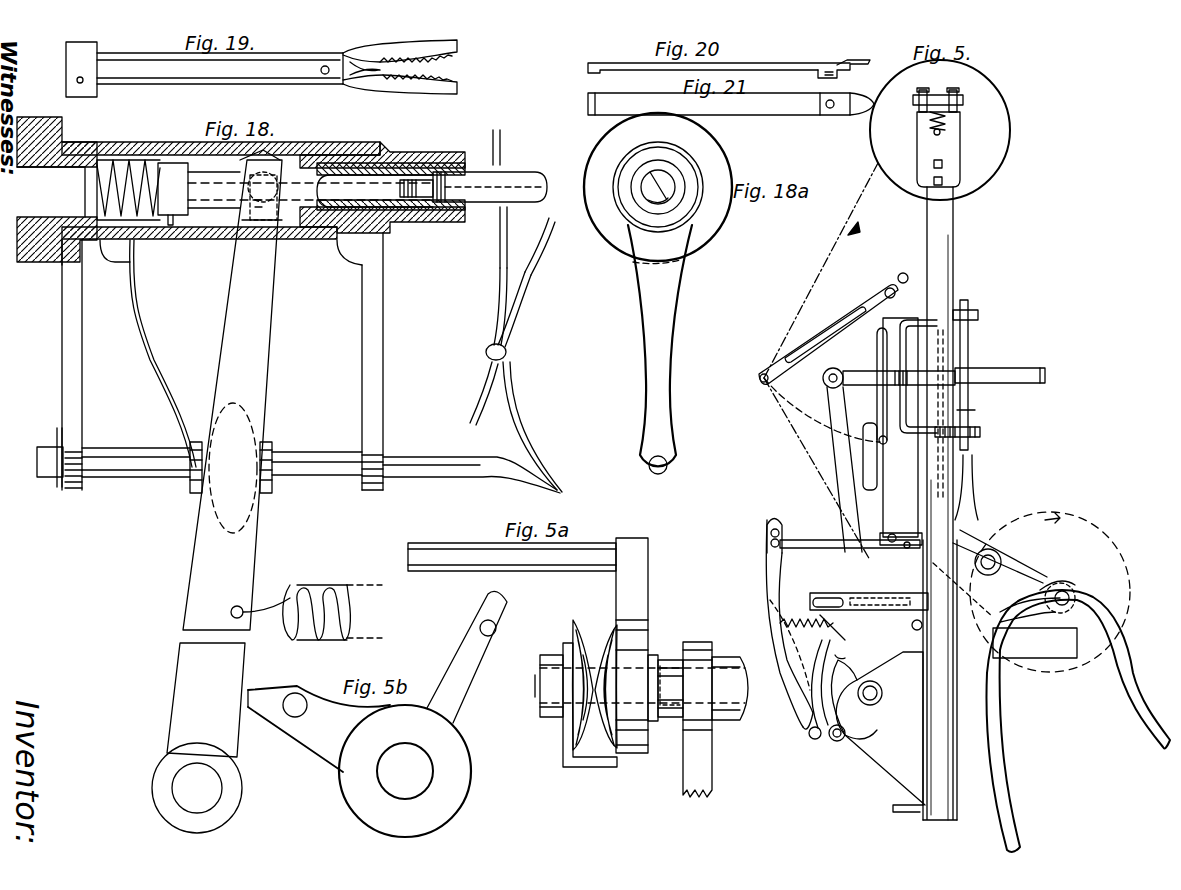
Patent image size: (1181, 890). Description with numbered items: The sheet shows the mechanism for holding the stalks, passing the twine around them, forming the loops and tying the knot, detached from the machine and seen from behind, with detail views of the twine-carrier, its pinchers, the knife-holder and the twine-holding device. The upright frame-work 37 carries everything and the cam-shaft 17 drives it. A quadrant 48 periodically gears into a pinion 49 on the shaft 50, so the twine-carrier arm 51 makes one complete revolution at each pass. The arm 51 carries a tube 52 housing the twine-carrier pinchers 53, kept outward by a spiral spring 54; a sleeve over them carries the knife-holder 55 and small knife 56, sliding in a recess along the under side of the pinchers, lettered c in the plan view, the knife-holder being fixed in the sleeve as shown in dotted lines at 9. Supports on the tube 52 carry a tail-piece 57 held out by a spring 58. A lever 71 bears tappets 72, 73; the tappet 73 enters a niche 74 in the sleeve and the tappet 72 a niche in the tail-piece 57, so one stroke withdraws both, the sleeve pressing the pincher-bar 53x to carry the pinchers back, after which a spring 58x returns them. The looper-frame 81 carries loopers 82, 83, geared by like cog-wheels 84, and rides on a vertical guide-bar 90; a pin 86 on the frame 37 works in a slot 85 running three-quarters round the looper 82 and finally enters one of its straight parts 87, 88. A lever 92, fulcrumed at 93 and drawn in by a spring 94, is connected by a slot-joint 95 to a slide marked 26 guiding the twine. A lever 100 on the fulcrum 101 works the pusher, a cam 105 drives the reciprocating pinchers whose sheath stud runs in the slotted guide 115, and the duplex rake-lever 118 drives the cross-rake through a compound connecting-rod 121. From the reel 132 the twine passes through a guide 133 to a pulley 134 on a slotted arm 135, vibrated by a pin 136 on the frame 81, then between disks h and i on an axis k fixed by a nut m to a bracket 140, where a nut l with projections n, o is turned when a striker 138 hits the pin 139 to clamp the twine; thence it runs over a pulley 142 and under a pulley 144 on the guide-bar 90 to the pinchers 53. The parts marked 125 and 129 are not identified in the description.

In FIG. 18, the bore 9 is at (391, 186).
In FIG. 5, the shaft 17 is at (883, 693).
In FIG. 5, the rod 26 is at (850, 547).
In FIG. 5, the upright frame-work 37 is at (925, 503).
In FIG. 5, the quadrant 48 is at (1037, 591).
In FIG. 5, the pinion 49 is at (1060, 577).
In FIG. 5, the shaft 50 is at (1074, 606).
In FIG. 18, the arm of the twine-carrier 51 is at (55, 365).
In FIG. 5, the arm of the twine-carrier 51 is at (1015, 594).
In FIG. 18, the tube 52 is at (145, 146).
In FIG. 18A, the tube 52 is at (663, 187).
In FIG. 19, the twine-carrier pinchers 53 is at (390, 67).
In FIG. 18, the twine-carrier pinchers 53 is at (367, 190).
In FIG. 18A, the twine-carrier pinchers 53 is at (658, 187).
In FIG. 5, the twine-carrier pinchers 53 is at (992, 548).
In FIG. 19, the pincher-bar 53x is at (81, 69).
In FIG. 18, the pincher-bar 53x is at (173, 194).
In FIG. 18, the spiral spring 54 is at (128, 190).
In FIG. 18, the knife-holder 55 is at (432, 222).
In FIG. 20, the knife-holder 55 is at (719, 61).
In FIG. 21, the knife-holder 55 is at (719, 104).
In FIG. 18, the knife 56 is at (516, 311).
In FIG. 20, the knife 56 is at (875, 60).
In FIG. 21, the knife 56 is at (847, 104).
In FIG. 18A, the knife 56 is at (658, 206).
In FIG. 18, the tail-piece 57 is at (452, 458).
In FIG. 18A, the tail-piece 57 is at (655, 482).
In FIG. 18, the spring 58 is at (222, 361).
In FIG. 18, the spring 58x is at (306, 612).
In FIG. 18, the lever 71 is at (217, 496).
In FIG. 18, the tappet 72 is at (233, 468).
In FIG. 18, the tappet 73 is at (259, 208).
In FIG. 18, the niche 74 is at (282, 145).
In FIG. 5, the frame 81 is at (984, 446).
In FIG. 5, the looper 82 is at (938, 422).
In FIG. 5, the looper 83 is at (966, 487).
In FIG. 5, the cog-wheels 84 is at (968, 432).
In FIG. 5, the slot 85 is at (965, 358).
In FIG. 5, the pin 86 is at (935, 404).
In FIG. 5, the straight part of slot 87 is at (960, 333).
In FIG. 5, the straight part of slot 88 is at (965, 415).
In FIG. 5, the guide-bar 90 is at (900, 427).
In FIG. 5, the lever 92 is at (789, 624).
In FIG. 5, the fulcrum 93 is at (810, 745).
In FIG. 5, the spring 94 is at (806, 631).
In FIG. 5, the slot-joint 95 is at (786, 536).
In FIG. 5, the lever 100 is at (831, 627).
In FIG. 5, the fulcrum 101 is at (842, 745).
In FIG. 5, the cam 105 is at (821, 684).
In FIG. 5, the slotted guide 115 is at (869, 594).
In FIG. 5, the duplex lever 118 is at (844, 469).
In FIG. 5, the compound connecting-rod 121 is at (1000, 375).
In FIG. 5, the cam 125 is at (854, 697).
In FIG. 5, the curved lever 129 is at (1078, 721).
In FIG. 5, the reel of twine 132 is at (940, 130).
In FIG. 5, the guide 133 is at (866, 232).
In FIG. 5, the pulley 134 is at (810, 469).
In FIG. 5, the slotted arm 135 is at (821, 270).
In FIG. 5, the pin 136 is at (833, 328).
In FIG. 5, the striker 138 is at (866, 456).
In FIG. 5B, the pin 139 is at (295, 705).
In FIG. 5A, the pin 139 is at (512, 557).
In FIG. 5A, the bracket 140 is at (697, 719).
In FIG. 5, the pulley 142 is at (896, 447).
In FIG. 5, the pulley 144 is at (880, 669).
In FIG. 19, the rod c is at (220, 68).
In FIG. 5A, the disk h is at (581, 676).
In FIG. 5A, the disk i is at (606, 676).
In FIG. 5A, the axis k is at (538, 687).
In FIG. 5B, the nut l is at (405, 771).
In FIG. 5A, the nut l is at (652, 660).
In FIG. 5A, the nut m is at (733, 684).
In FIG. 5, the nut m is at (1050, 592).
In FIG. 5B, the projection n is at (319, 729).
In FIG. 5A, the projection n is at (632, 645).
In FIG. 5B, the projection o is at (467, 657).